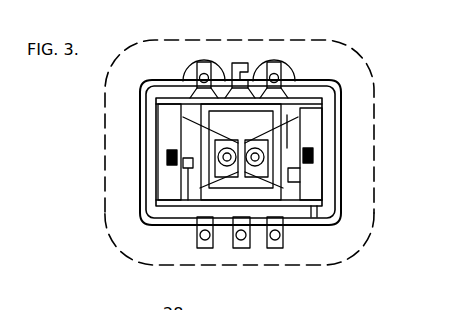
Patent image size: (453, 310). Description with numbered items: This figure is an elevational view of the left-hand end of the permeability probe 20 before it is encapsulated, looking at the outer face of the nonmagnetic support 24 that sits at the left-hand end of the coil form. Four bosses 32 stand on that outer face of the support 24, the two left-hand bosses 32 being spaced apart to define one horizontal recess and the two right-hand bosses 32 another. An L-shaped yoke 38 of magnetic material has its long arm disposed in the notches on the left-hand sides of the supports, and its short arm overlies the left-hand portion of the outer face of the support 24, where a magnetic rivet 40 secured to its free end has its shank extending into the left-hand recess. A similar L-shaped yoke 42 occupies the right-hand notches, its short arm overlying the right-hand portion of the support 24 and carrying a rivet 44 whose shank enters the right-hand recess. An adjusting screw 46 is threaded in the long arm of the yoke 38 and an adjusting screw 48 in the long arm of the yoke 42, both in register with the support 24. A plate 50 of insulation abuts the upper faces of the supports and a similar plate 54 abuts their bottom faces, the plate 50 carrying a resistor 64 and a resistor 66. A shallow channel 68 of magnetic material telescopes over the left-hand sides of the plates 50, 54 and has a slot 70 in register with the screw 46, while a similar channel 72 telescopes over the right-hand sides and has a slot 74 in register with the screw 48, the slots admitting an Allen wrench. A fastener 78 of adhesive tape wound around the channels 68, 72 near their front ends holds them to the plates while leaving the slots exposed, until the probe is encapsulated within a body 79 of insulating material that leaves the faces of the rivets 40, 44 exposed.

The permeability probe 20 is at (387, 70).
The nonmagnetic support 24 is at (193, 117).
The bosses 32 is at (259, 240).
The L-shaped yoke 38 is at (212, 171).
The rivet 40 is at (213, 170).
The L-shaped yoke 42 is at (296, 174).
The rivet 44 is at (256, 143).
The adjusting screw 46 is at (170, 160).
The adjusting screw 48 is at (306, 152).
The plate of insulation 50 is at (230, 153).
The plate of insulation 54 is at (314, 212).
The resistor 64 is at (199, 62).
The resistor 66 is at (288, 61).
The shallow channel 68 is at (150, 132).
The slot 70 is at (160, 168).
The shallow channel 72 is at (332, 121).
The slot 74 is at (341, 146).
The fastener 78 is at (147, 226).
The body of insulating material 79 is at (323, 265).